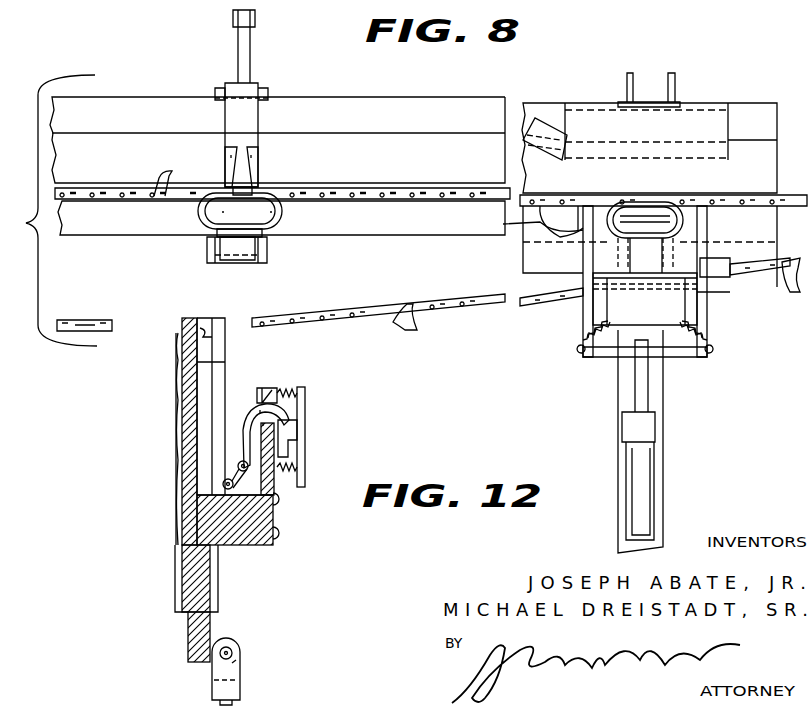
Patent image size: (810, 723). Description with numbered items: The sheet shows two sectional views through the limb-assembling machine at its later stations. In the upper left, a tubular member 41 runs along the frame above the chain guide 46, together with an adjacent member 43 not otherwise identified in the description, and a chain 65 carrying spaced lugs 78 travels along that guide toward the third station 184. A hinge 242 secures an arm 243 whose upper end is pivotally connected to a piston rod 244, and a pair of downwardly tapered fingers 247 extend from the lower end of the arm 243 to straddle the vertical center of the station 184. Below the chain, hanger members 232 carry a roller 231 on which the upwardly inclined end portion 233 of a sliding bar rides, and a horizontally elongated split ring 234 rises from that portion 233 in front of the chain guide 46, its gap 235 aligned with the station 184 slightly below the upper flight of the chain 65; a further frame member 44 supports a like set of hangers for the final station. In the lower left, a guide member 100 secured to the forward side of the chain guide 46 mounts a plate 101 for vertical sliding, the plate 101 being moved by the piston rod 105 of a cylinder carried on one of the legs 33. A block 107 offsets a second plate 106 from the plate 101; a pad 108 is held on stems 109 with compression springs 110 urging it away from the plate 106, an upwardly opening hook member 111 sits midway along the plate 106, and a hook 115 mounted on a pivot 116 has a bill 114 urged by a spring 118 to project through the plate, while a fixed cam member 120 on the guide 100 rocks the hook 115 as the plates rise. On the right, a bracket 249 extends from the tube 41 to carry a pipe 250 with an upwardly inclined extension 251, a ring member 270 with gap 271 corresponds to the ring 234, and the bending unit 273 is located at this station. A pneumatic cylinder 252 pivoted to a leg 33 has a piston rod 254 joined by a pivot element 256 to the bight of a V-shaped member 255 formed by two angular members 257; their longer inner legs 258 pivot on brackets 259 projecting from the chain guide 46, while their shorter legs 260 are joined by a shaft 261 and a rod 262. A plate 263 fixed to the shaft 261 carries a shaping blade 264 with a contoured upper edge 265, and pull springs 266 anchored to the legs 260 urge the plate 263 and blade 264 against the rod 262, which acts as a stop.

In FIG. 8, the piston rod 244 is at (256, 21).
In FIG. 8, the hinge 242 is at (221, 92).
In FIG. 8, the arm 243 is at (248, 92).
In FIG. 8, the third station 184 is at (303, 84).
In FIG. 8, the downwardly tapered fingers 247 is at (240, 152).
In FIG. 8, the tubular member 41 is at (378, 131).
In FIG. 8, the lugs 78 is at (163, 173).
In FIG. 12, the lugs 78 is at (567, 200).
In FIG. 8, the gap 235 is at (242, 187).
In FIG. 8, the lower board layer 43 is at (378, 180).
In FIG. 8, the chain 65 is at (418, 192).
In FIG. 8, the horizontally elongated split ring 234 is at (203, 217).
In FIG. 8, the member 44 is at (130, 223).
In FIG. 8, the hanger members 232 is at (208, 246).
In FIG. 8, the roller 231 is at (225, 264).
In FIG. 8, the upwardly inclined end portion 233 is at (240, 242).
In FIG. 8, the chain guide 46 is at (178, 370).
In FIG. 8, the fixed cam member 120 is at (212, 357).
In FIG. 8, the stems 109 is at (258, 388).
In FIG. 8, the compression springs 110 is at (287, 388).
In FIG. 8, the bill 114 is at (283, 415).
In FIG. 8, the pad 108 is at (307, 415).
In FIG. 8, the guide member 100 is at (182, 432).
In FIG. 8, the hook member 111 is at (297, 442).
In FIG. 8, the hook 115 is at (243, 440).
In FIG. 8, the pivot 116 is at (250, 476).
In FIG. 8, the spring 118 is at (193, 522).
In FIG. 8, the plate 106 is at (273, 517).
In FIG. 8, the block 107 is at (240, 533).
In FIG. 8, the plate 101 is at (188, 622).
In FIG. 8, the piston rod 105 is at (242, 684).
In FIG. 12, the bending unit 273 is at (618, 67).
In FIG. 12, the bracket 249 is at (670, 100).
In FIG. 12, the pipe 250 is at (690, 117).
In FIG. 12, the upwardly inclined extension 251 is at (543, 133).
In FIG. 12, the longer inner legs 258 is at (557, 179).
In FIG. 12, the brackets 259 is at (600, 200).
In FIG. 12, the gap 271 is at (643, 203).
In FIG. 12, the ring member 270 is at (682, 217).
In FIG. 12, the pivot element 256 is at (713, 230).
In FIG. 12, the contoured upper edge 265 is at (515, 223).
In FIG. 12, the rod 262 is at (720, 255).
In FIG. 12, the shaft 261 is at (707, 293).
In FIG. 12, the shorter legs 260 is at (708, 312).
In FIG. 12, the shaping blade 264 is at (547, 300).
In FIG. 12, the plate 263 is at (660, 318).
In FIG. 12, the angular members 257 is at (580, 342).
In FIG. 12, the V-shaped member 255 is at (582, 363).
In FIG. 12, the pull springs 266 is at (610, 353).
In FIG. 12, the piston rod 254 is at (638, 397).
In FIG. 12, the legs 33 is at (618, 480).
In FIG. 12, the pneumatic cylinder 252 is at (643, 492).